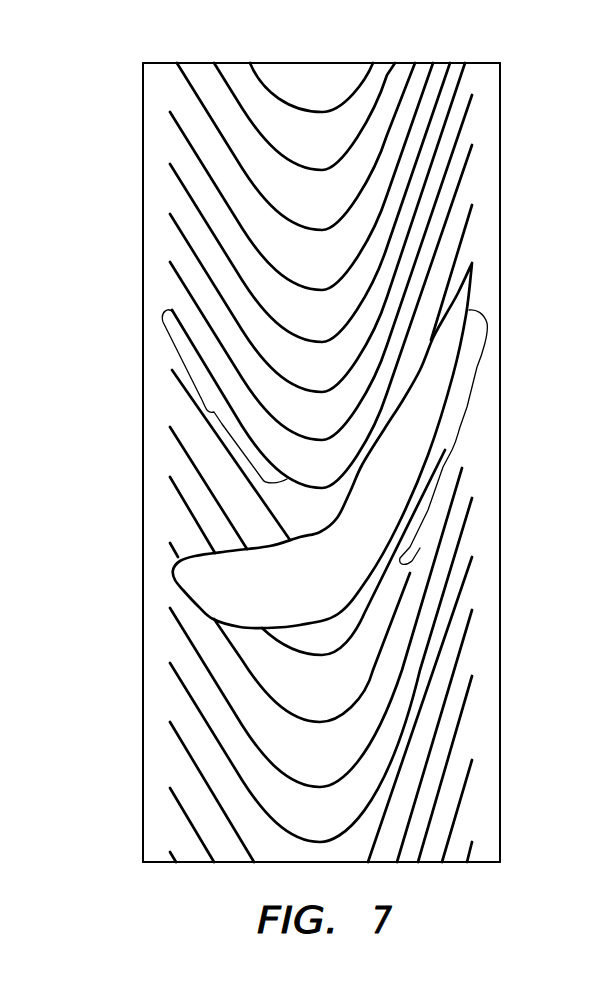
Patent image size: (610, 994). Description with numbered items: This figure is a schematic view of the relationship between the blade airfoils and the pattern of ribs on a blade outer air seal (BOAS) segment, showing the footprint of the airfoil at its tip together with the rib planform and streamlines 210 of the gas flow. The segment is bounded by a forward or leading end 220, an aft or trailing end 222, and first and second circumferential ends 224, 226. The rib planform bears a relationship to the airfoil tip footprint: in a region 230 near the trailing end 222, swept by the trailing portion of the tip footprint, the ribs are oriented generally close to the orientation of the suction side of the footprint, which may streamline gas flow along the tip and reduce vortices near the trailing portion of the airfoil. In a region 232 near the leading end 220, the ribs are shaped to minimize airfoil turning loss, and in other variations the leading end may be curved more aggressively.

The flow streamlines 210 is at (215, 745).
The forward/upstream/leading end 220 is at (143, 645).
The aft/downstream/trailing end 222 is at (500, 653).
The first circumferential end 224 is at (410, 862).
The second circumferential end 226 is at (320, 63).
The region near the trailing end 230 is at (458, 440).
The region near the leading end 232 is at (207, 407).